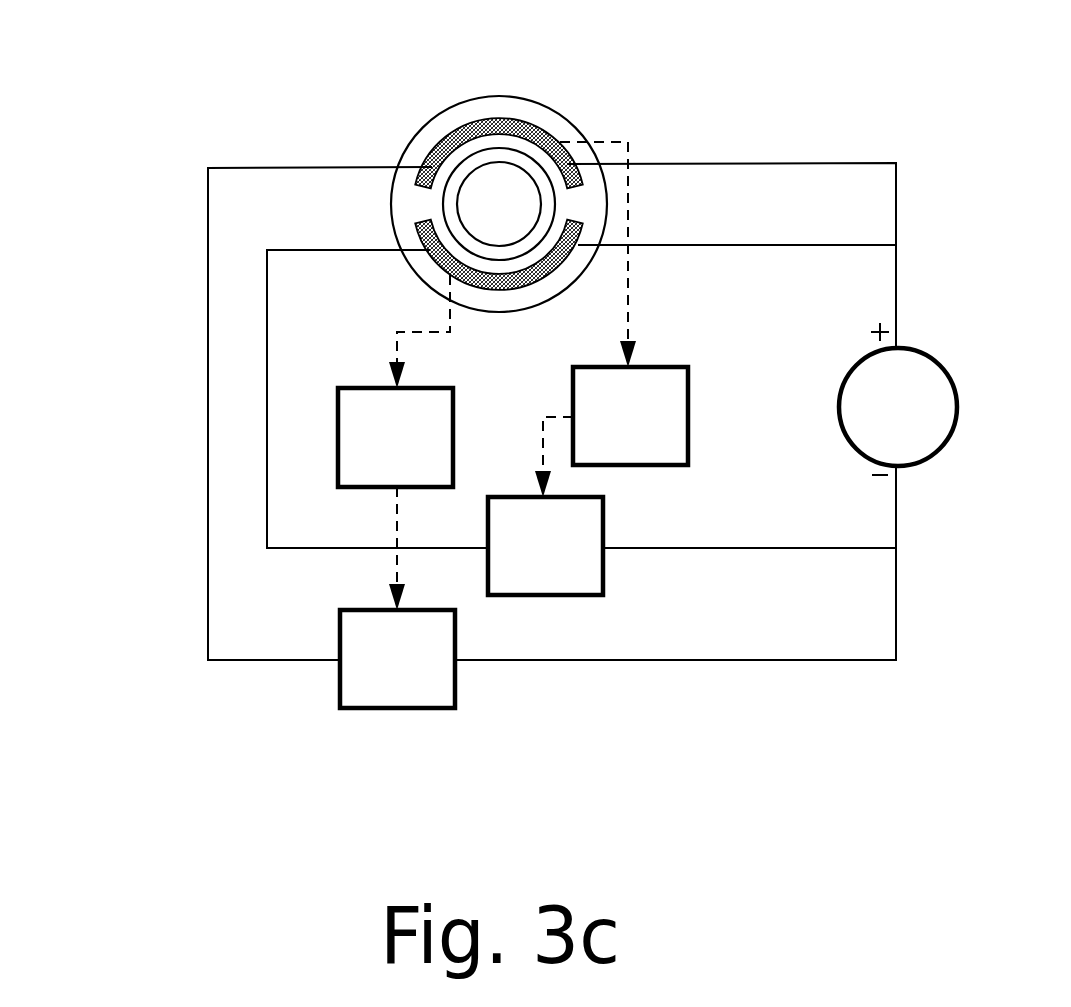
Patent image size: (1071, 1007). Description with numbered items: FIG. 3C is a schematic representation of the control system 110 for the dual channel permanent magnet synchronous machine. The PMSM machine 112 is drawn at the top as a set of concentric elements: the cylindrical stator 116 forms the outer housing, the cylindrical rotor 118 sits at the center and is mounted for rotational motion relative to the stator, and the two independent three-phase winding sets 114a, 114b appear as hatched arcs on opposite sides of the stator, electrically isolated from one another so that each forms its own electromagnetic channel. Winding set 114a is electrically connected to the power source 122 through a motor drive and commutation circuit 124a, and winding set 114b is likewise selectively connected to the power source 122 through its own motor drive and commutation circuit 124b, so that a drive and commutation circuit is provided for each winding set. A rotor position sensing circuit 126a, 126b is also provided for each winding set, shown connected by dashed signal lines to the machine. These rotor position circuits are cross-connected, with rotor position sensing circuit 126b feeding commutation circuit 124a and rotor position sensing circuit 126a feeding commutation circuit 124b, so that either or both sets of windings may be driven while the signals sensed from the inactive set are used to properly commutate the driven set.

The control system 110 is at (206, 683).
The PMSM machine 112 is at (404, 188).
The winding set 114a is at (428, 160).
The winding set 114b is at (433, 267).
The stator 116 is at (467, 115).
The rotor 118 is at (500, 200).
The power source 122 is at (932, 428).
The motor drive and commutation circuit 124a is at (443, 680).
The motor drive and commutation circuit 124b is at (588, 568).
The rotor position sensing circuit 126a is at (673, 438).
The rotor position sensing circuit 126b is at (440, 462).